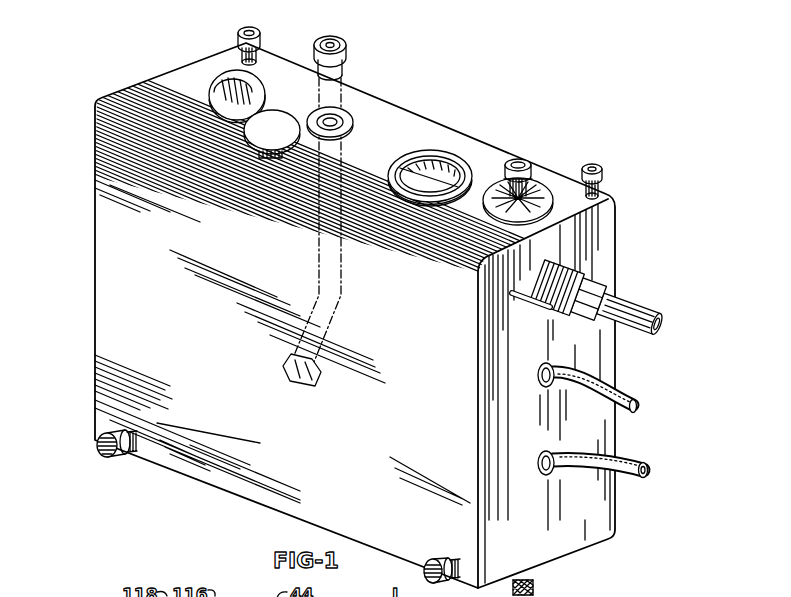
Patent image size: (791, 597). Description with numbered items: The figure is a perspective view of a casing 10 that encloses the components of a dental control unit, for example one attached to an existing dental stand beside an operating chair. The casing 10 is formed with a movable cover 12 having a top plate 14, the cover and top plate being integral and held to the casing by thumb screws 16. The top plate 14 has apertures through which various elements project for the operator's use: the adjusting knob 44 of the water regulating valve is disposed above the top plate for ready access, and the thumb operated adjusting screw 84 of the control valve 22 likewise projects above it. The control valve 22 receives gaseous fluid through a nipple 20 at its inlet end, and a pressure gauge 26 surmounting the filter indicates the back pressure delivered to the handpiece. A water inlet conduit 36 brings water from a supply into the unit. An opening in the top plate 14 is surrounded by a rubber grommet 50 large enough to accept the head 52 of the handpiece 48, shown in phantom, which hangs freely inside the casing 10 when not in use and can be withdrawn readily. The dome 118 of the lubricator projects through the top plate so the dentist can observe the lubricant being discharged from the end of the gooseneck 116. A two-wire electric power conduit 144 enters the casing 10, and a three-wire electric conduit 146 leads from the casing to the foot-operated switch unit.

The casing 10 is at (655, 350).
The movable cover 12 is at (108, 210).
The top plate 14 is at (400, 135).
The thumb screws 16 is at (254, 43).
The nipple 20 is at (583, 277).
The control valve 22 is at (525, 165).
The pressure gauge 26 is at (450, 152).
The water inlet conduit 36 is at (535, 308).
The adjusting knob 44 is at (262, 135).
The handpiece 48 is at (347, 58).
The rubber grommet 50 is at (352, 118).
The head 52 is at (300, 385).
The thumb operated adjusting screw 84 is at (493, 155).
The gooseneck 116 is at (212, 98).
The dome 118 is at (230, 93).
The two-wire electric power conduit 144 is at (626, 405).
The three-wire electric conduit 146 is at (630, 478).